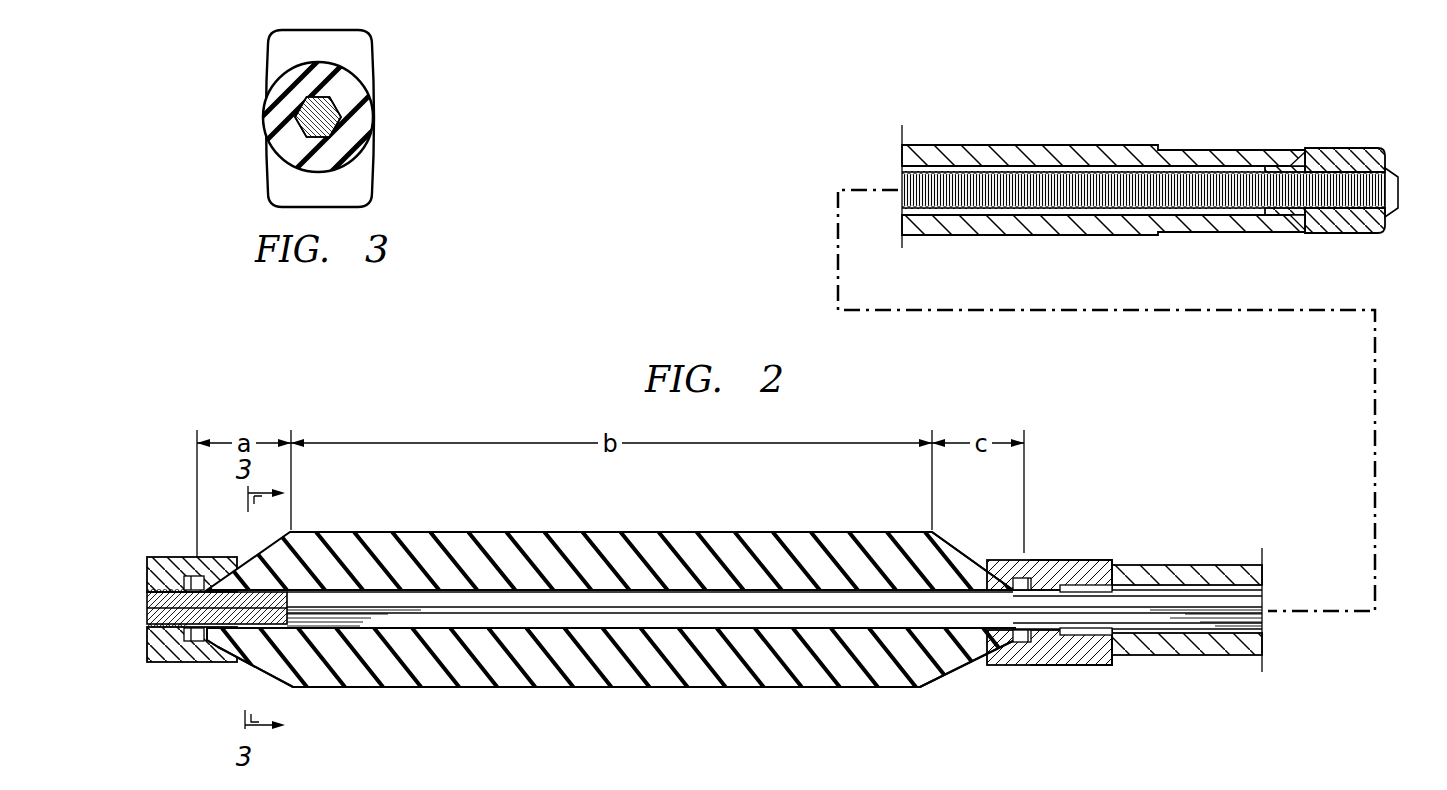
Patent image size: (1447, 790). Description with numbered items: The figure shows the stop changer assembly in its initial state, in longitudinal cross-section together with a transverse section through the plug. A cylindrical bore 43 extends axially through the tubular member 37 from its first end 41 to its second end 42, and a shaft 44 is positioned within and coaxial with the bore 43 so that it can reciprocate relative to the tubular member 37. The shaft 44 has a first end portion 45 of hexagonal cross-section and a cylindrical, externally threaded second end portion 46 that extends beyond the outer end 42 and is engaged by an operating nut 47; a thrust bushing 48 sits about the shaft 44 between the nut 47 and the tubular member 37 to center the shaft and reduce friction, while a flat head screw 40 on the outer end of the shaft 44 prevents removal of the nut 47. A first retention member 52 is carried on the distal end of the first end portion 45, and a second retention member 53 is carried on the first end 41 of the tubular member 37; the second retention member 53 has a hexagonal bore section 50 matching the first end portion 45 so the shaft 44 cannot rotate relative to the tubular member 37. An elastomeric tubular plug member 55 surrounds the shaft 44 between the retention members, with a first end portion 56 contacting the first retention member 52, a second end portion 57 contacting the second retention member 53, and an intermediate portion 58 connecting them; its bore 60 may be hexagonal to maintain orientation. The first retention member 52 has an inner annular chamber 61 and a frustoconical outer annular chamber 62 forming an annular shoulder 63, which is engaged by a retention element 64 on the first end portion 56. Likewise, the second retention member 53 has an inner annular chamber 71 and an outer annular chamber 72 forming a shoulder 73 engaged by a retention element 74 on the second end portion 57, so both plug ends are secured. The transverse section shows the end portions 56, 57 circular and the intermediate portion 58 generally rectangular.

In FIG. 2, the tubular member 37 is at (865, 403).
In FIG. 2, the flat head screw 40 is at (1399, 204).
In FIG. 2, the first end 41 is at (1212, 565).
In FIG. 2, the second end 42 is at (1240, 148).
In FIG. 2, the cylindrical bore 43 is at (1160, 636).
In FIG. 3, the shaft 44 is at (324, 147).
In FIG. 2, the shaft 44 is at (1265, 602).
In FIG. 2, the first end portion 45 is at (393, 632).
In FIG. 2, the second end portion 46 is at (1207, 209).
In FIG. 2, the operating nut 47 is at (1352, 148).
In FIG. 2, the thrust bushing 48 is at (1293, 150).
In FIG. 2, the bore section 50 is at (1066, 606).
In FIG. 2, the first retention member 52 is at (138, 589).
In FIG. 2, the second retention member 53 is at (1100, 560).
In FIG. 3, the elastomeric tubular plug member 55 is at (370, 52).
In FIG. 2, the elastomeric tubular plug member 55 is at (606, 620).
In FIG. 3, the first end portion 56 is at (275, 82).
In FIG. 2, the first end portion 56 is at (262, 668).
In FIG. 2, the second end portion 57 is at (955, 548).
In FIG. 2, the intermediate portion 58 is at (570, 689).
In FIG. 3, the bore 60 is at (342, 128).
In FIG. 2, the bore 60 is at (683, 622).
In FIG. 2, the inner annular chamber 61 is at (172, 640).
In FIG. 2, the outer annular chamber 62 is at (233, 645).
In FIG. 2, the annular shoulder 63 is at (210, 576).
In FIG. 2, the retention element 64 is at (203, 648).
In FIG. 2, the inner annular chamber 71 is at (1045, 654).
In FIG. 2, the outer annular chamber 72 is at (985, 654).
In FIG. 2, the annular shoulder 73 is at (1018, 664).
In FIG. 2, the retention element 74 is at (1010, 576).